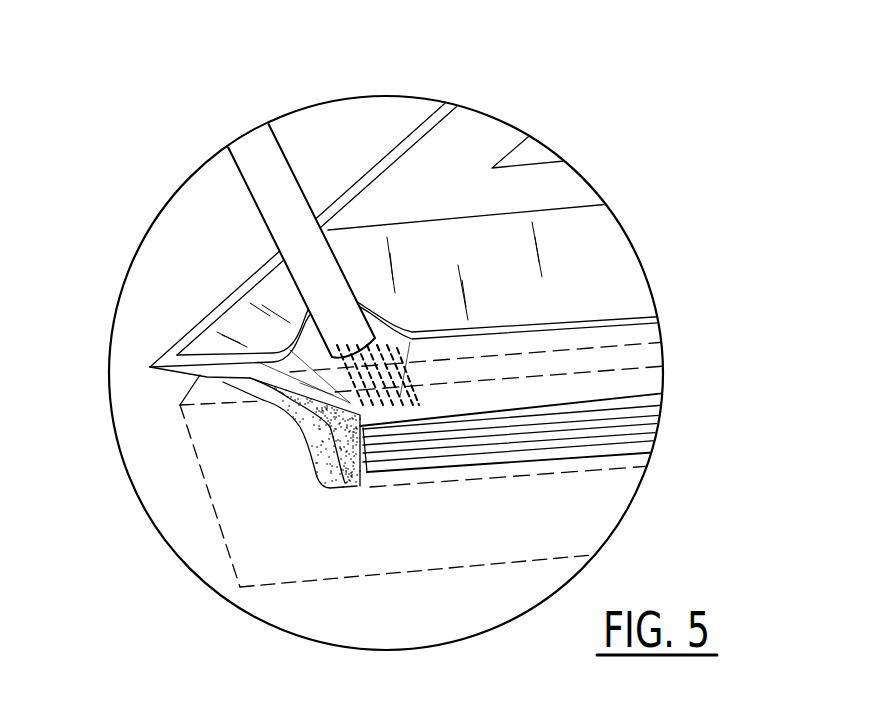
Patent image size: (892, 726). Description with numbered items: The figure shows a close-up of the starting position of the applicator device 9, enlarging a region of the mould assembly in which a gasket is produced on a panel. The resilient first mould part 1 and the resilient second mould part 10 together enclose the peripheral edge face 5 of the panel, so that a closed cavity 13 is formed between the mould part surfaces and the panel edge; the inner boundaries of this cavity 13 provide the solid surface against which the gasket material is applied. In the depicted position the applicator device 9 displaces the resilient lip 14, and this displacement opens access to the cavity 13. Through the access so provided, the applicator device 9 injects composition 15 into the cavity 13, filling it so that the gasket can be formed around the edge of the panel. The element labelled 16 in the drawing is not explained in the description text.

The resilient first mould part 1 is at (242, 507).
The peripheral edge face 5 is at (610, 427).
The applicator device 9 is at (267, 185).
The resilient second mould part 10 is at (582, 247).
The closed cavity 13 is at (357, 455).
The resilient lip 14 is at (410, 342).
The composition 15 is at (425, 372).
The spray nozzle 16 is at (305, 117).